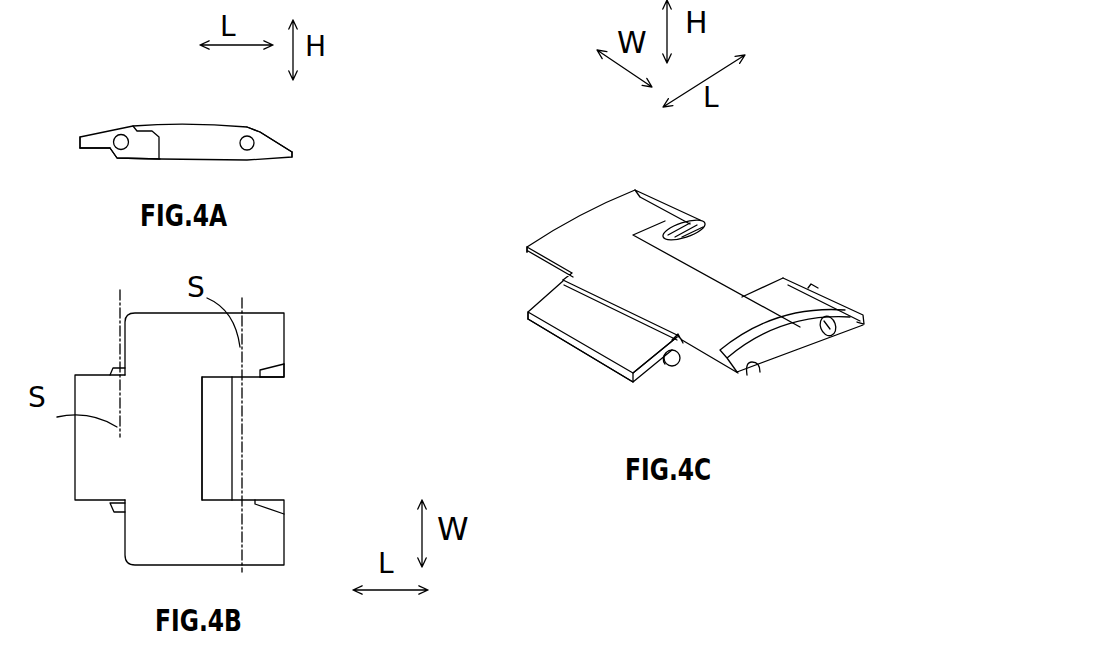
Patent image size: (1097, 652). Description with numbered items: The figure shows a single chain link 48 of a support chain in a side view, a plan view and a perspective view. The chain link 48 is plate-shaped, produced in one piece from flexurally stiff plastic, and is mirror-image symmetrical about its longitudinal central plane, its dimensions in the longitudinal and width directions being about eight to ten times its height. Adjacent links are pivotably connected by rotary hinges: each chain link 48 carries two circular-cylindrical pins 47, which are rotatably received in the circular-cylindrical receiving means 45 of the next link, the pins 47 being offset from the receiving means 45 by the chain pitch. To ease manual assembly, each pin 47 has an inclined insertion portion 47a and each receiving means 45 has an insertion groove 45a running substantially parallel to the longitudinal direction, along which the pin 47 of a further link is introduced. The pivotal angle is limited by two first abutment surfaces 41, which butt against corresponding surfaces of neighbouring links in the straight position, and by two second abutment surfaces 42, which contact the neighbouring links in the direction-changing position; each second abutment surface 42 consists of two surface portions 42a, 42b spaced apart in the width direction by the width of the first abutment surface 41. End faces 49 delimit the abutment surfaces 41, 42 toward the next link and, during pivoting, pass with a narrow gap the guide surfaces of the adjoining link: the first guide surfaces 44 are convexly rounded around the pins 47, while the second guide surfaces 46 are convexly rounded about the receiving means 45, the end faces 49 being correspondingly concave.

In FIG. 4A, the first abutment surface 41 is at (88, 150).
In FIG. 4B, the first abutment surface 41 is at (220, 447).
In FIG. 4C, the first abutment surface 41 is at (652, 378).
In FIG. 4A, the second abutment surface 42 is at (150, 138).
In FIG. 4C, the second abutment surface 42 is at (652, 193).
In FIG. 4B, the surface portion 42a is at (277, 338).
In FIG. 4B, the surface portion 42b is at (273, 538).
In FIG. 4A, the first guide surface 44 is at (90, 160).
In FIG. 4C, the first guide surface 44 is at (665, 373).
In FIG. 4A, the circular-cylindrical receiving means 45 is at (255, 135).
In FIG. 4C, the circular-cylindrical receiving means 45 is at (833, 334).
In FIG. 4B, the insertion groove 45a is at (277, 377).
In FIG. 4C, the insertion groove 45a is at (702, 220).
In FIG. 4A, the second guide surface 46 is at (268, 130).
In FIG. 4C, the second guide surface 46 is at (790, 282).
In FIG. 4A, the circular-cylindrical pin 47 is at (120, 140).
In FIG. 4B, the circular-cylindrical pin 47 is at (100, 352).
In FIG. 4C, the circular-cylindrical pin 47 is at (688, 368).
In FIG. 4B, the inclined insertion portion 47a is at (115, 513).
In FIG. 4A, the chain link 48 is at (70, 66).
In FIG. 4B, the chain link 48 is at (314, 301).
In FIG. 4C, the chain link 48 is at (782, 153).
In FIG. 4A, the end face 49 is at (80, 138).
In FIG. 4B, the end face 49 is at (233, 480).
In FIG. 4C, the end face 49 is at (532, 262).